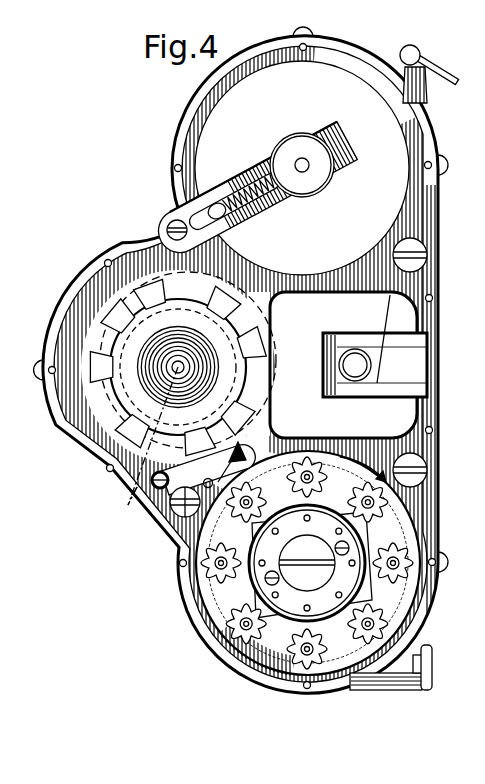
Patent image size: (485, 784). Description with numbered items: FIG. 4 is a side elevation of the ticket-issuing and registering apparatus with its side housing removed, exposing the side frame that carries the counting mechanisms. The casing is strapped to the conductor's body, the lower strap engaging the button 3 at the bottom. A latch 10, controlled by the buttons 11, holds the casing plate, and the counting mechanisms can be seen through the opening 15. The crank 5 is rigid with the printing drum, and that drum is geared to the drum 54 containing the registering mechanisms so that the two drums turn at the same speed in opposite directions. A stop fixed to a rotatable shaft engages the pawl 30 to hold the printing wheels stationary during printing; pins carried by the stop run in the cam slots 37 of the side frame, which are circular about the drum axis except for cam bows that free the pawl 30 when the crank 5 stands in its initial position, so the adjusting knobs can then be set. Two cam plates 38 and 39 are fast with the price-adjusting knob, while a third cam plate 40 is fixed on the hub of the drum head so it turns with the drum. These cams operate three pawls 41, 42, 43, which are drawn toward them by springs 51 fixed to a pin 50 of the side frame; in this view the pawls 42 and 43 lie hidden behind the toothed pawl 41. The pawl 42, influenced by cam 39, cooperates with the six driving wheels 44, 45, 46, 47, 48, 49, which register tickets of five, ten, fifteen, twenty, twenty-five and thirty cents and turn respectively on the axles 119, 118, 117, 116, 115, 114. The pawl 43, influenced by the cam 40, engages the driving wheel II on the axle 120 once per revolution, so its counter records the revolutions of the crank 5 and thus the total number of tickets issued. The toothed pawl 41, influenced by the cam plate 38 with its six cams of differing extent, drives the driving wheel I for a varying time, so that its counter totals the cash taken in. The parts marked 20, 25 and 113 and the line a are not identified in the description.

The button 3 is at (399, 667).
The crank 5 is at (263, 345).
The latch 10 is at (190, 210).
The buttons 11 is at (328, 160).
The third opening 15 is at (200, 441).
The stop lug 20 is at (132, 431).
The stop lug 25 is at (101, 368).
The pawl 30 is at (118, 316).
The cam slots 37 is at (242, 290).
The cam plate 38 is at (135, 335).
The cam plate 39 is at (148, 276).
The cam plate 40 is at (225, 431).
The toothed pawl 41 is at (210, 468).
The pawl 42 is at (135, 487).
The pawl 43 is at (135, 487).
The driving wheel 44 is at (316, 477).
The driving wheel 45 is at (371, 507).
The driving wheel 46 is at (393, 570).
The driving wheel 47 is at (360, 624).
The driving wheel 48 is at (296, 649).
The driving wheel 49 is at (246, 615).
The pin 50 is at (162, 490).
The springs 51 is at (185, 513).
The drum 54 is at (264, 640).
The gear pivot 113 is at (218, 566).
The axle 114 is at (243, 626).
The axle 115 is at (307, 655).
The axle 116 is at (374, 624).
The axle 117 is at (396, 560).
The axle 118 is at (374, 502).
The axle 119 is at (309, 476).
The axle 120 is at (250, 502).
The reference line a is at (146, 445).
The driving wheel I is at (219, 577).
The driving wheel II is at (240, 510).